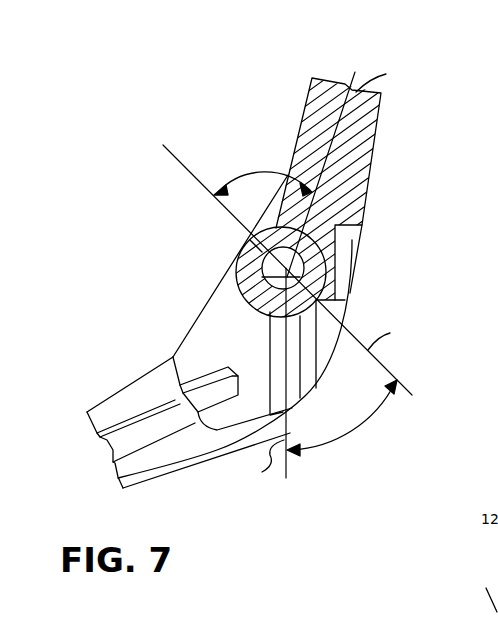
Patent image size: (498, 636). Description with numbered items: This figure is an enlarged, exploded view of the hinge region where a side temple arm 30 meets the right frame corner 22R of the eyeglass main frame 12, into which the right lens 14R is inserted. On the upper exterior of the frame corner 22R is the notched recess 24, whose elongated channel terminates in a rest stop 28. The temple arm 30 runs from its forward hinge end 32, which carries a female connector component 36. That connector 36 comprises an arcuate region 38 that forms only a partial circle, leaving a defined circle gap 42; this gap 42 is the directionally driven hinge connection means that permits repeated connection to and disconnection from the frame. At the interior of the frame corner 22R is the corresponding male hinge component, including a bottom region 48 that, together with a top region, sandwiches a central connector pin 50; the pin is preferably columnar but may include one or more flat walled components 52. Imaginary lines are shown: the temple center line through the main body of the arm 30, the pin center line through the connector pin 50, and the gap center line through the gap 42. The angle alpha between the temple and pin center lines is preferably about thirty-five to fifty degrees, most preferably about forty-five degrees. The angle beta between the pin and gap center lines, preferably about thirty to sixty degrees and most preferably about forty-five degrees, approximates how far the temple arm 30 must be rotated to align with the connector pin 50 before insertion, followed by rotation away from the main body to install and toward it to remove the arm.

The eyeglass main frame 12 is at (82, 456).
The right lens 14R is at (130, 447).
The frame corner 22R is at (180, 324).
The notched recess 24 is at (316, 366).
The rest stop 28 is at (345, 300).
The side temple arm 30 is at (298, 80).
The hinge end 32 is at (356, 178).
The female connector component 36 is at (336, 252).
The arcuate region 38 is at (250, 240).
The circle gap 42 is at (277, 314).
The bottom region 48 is at (256, 277).
The connector pin 50 is at (262, 270).
The flat walled component 52 is at (235, 309).